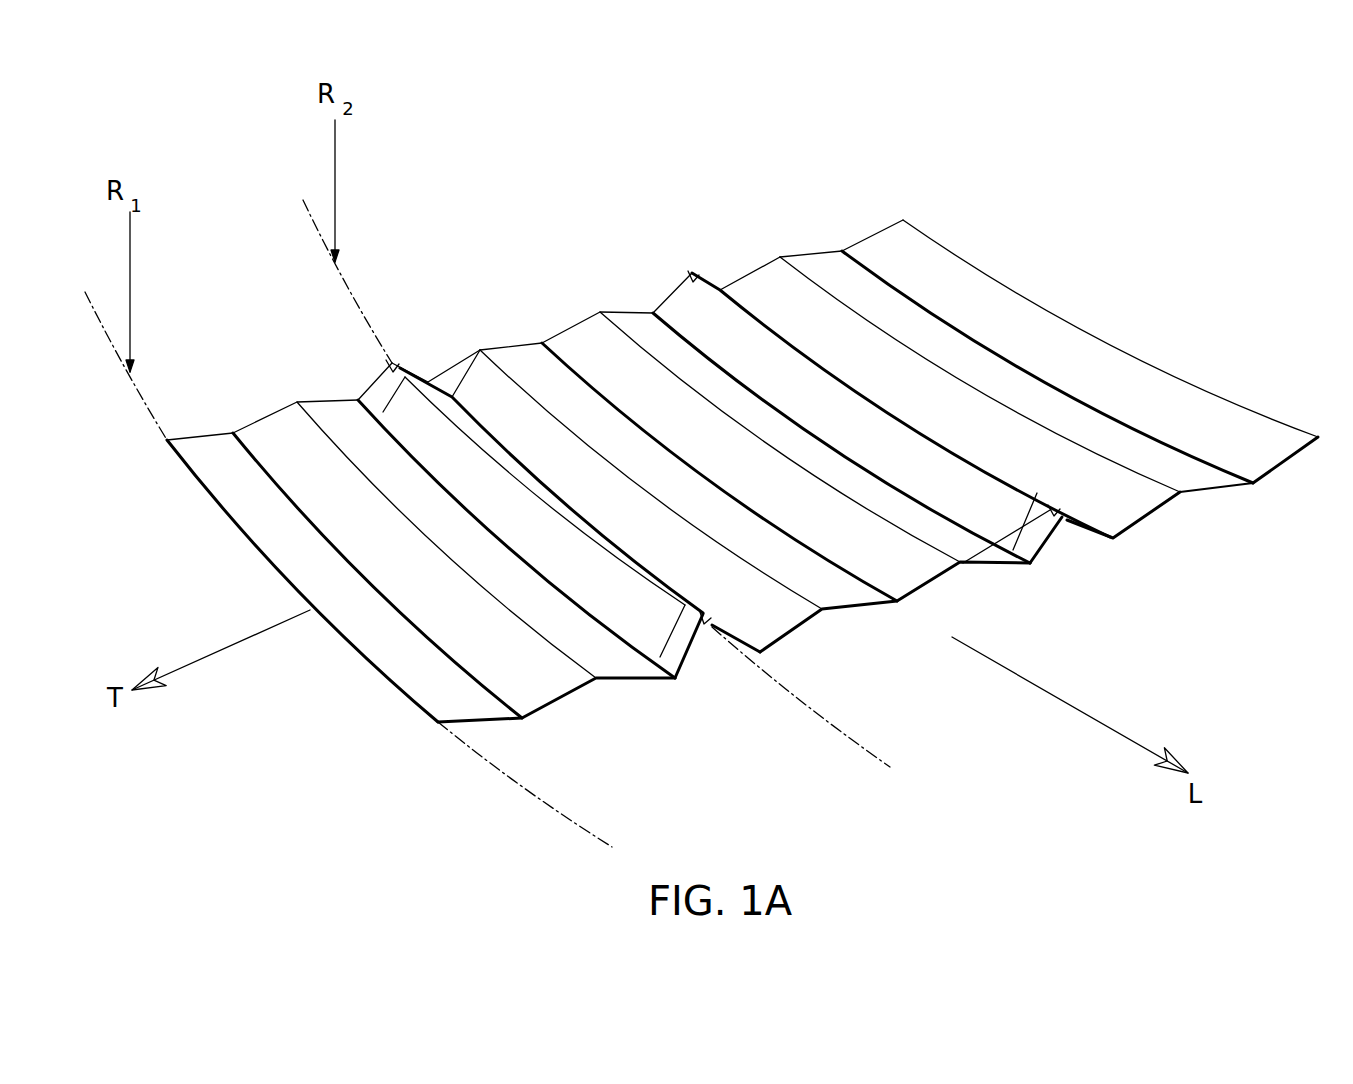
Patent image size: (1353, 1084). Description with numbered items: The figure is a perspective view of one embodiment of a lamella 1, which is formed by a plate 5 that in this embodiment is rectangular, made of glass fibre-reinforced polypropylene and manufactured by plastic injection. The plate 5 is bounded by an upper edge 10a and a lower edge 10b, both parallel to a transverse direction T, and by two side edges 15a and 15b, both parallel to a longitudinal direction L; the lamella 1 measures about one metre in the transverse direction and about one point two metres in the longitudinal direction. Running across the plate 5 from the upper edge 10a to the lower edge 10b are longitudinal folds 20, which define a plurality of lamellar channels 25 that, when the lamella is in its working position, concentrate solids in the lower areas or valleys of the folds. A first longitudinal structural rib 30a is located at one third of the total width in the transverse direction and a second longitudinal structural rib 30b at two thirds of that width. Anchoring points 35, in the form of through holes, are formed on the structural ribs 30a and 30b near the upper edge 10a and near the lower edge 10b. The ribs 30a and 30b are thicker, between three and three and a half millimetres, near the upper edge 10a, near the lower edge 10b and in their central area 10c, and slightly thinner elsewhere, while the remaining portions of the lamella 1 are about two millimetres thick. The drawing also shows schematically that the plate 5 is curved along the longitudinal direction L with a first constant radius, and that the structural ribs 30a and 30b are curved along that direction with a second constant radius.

The lamella 1 is at (1070, 225).
The plate 5 is at (953, 357).
The upper edge 10a is at (505, 258).
The lower edge 10b is at (937, 658).
The central area 10c is at (903, 397).
The side edge 15a is at (250, 575).
The side edge 15b is at (1090, 312).
The longitudinal folds 20 is at (233, 432).
The lamellar channels 25 is at (378, 600).
The first longitudinal structural rib 30a is at (388, 362).
The second longitudinal structural rib 30b is at (692, 272).
The anchoring points 35 is at (394, 362).